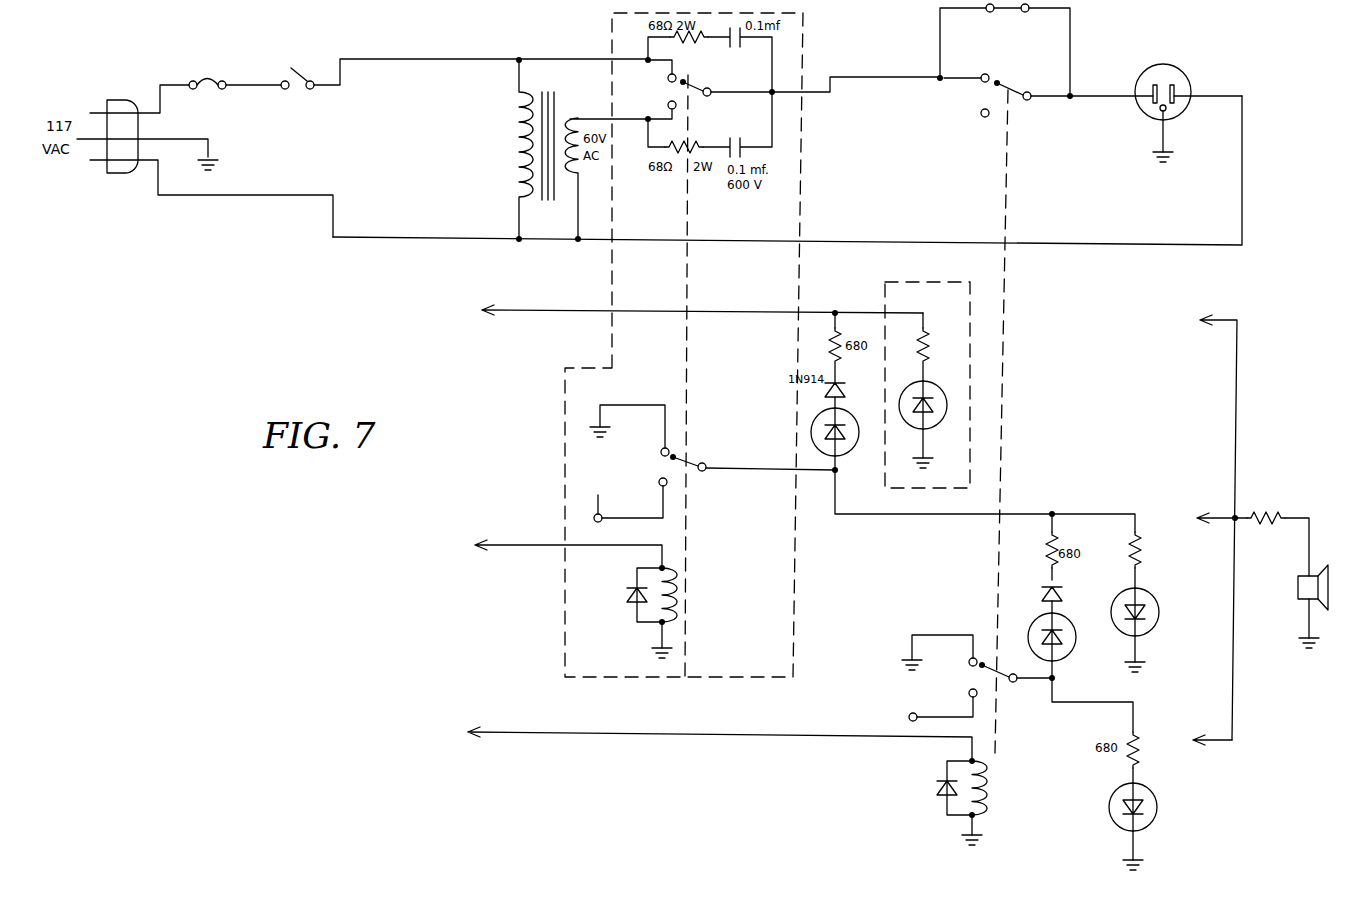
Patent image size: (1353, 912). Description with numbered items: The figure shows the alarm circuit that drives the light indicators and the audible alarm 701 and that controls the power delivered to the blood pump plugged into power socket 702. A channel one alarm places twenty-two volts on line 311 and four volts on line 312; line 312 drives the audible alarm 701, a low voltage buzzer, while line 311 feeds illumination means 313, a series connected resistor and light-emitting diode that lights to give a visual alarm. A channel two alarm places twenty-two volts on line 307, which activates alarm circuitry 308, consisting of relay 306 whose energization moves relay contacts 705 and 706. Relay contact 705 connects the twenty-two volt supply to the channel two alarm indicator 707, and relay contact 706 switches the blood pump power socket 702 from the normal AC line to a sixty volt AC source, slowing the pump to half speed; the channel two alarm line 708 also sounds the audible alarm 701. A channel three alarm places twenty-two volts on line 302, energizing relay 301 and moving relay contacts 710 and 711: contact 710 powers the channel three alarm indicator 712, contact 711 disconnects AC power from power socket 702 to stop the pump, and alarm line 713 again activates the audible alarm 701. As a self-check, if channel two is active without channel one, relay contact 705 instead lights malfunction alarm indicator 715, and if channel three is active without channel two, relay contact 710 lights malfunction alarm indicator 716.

The relay 301 is at (1014, 781).
The channel 3 alarm line 302 is at (658, 733).
The relay 306 is at (693, 593).
The channel 2 alarm line 307 is at (532, 545).
The alarm circuitry 308 is at (798, 272).
The channel 1 alarm line 311 is at (532, 310).
The channel 1 alarm line 312 is at (1237, 370).
The illumination means 313 is at (932, 282).
The audible alarm 701 is at (1298, 590).
The power socket 702 is at (1190, 85).
The relay contact 705 is at (690, 450).
The relay contact 706 is at (687, 82).
The channel 2 alarm indicator 707 is at (1159, 604).
The channel 2 alarm line 708 is at (1217, 514).
The relay contact 710 is at (1000, 678).
The relay contact 711 is at (1012, 95).
The channel 3 alarm indicator 712 is at (1157, 801).
The channel 3 alarm line 713 is at (1210, 741).
The alarm indicator 715 is at (852, 452).
The alarm indicator 716 is at (1070, 652).